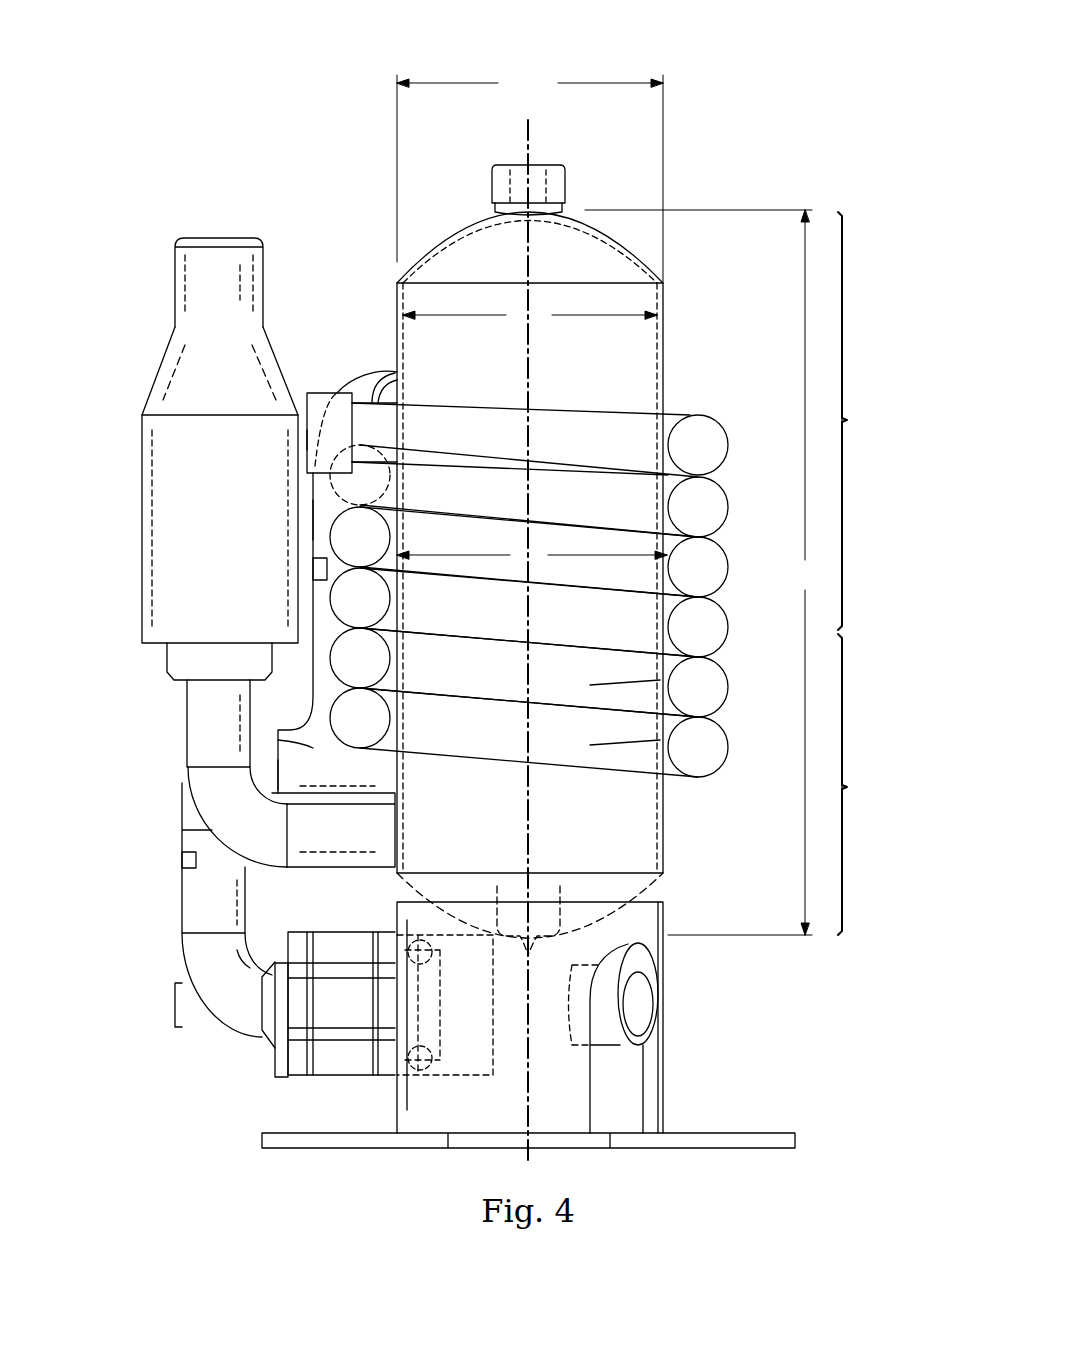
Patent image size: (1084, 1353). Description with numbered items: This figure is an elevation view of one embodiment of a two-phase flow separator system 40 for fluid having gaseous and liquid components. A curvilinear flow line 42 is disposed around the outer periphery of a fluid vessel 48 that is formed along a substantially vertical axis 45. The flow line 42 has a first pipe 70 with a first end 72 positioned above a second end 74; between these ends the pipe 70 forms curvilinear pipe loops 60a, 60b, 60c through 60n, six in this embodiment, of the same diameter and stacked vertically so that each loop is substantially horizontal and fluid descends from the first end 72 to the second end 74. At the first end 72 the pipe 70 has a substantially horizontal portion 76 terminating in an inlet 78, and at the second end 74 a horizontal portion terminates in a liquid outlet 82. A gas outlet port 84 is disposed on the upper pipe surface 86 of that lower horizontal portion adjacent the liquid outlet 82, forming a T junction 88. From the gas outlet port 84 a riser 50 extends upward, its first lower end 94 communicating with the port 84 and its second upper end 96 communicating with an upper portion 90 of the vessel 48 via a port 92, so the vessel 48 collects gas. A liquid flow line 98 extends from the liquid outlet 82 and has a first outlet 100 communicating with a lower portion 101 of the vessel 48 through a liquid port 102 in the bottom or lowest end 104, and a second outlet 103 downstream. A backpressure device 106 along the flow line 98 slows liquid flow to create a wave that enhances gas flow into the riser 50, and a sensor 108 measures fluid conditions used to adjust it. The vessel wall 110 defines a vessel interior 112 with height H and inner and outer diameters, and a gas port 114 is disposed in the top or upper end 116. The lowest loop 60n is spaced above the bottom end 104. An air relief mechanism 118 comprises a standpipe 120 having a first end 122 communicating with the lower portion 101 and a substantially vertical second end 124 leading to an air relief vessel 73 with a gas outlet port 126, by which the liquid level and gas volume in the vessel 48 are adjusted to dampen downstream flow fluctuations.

The two-phase flow separator system 40 is at (707, 175).
The curvilinear flow line 42 is at (727, 415).
The central axis 45 is at (526, 142).
The fluid vessel 48 is at (582, 207).
The riser 50 is at (313, 520).
The curvilinear pipe loop 60a is at (729, 440).
The curvilinear pipe loop 60b is at (729, 500).
The curvilinear pipe loop 60c is at (729, 560).
The lowest pipe loop 60n is at (729, 752).
The first pipe 70 is at (684, 407).
The first end 72 is at (322, 393).
The air relief vessel 73 is at (143, 525).
The second end 74 is at (292, 778).
The substantially horizontal portion 76 is at (482, 403).
The inlet 78 is at (307, 442).
The liquid outlet 82 is at (278, 748).
The gas outlet port 84 is at (397, 688).
The upper pipe surface 86 is at (307, 730).
The T junction 88 is at (355, 795).
The upper portion 90 is at (861, 420).
The port 92 is at (400, 392).
The first lower end 94 is at (313, 685).
The second upper end 96 is at (362, 384).
The liquid flow line 98 is at (181, 905).
The first outlet 100 is at (557, 900).
The lower portion 101 is at (868, 790).
The liquid port 102 is at (510, 900).
The second outlet 103 is at (640, 1006).
The bottom or lowest end 104 is at (665, 912).
The backpressure device 106 is at (348, 1076).
The sensor 108 is at (313, 568).
The vessel wall 110 is at (665, 284).
The vessel interior 112 is at (445, 248).
The gas port 114 is at (550, 165).
The top or upper end 116 is at (478, 210).
The air relief mechanism 118 is at (184, 440).
The standpipe 120 is at (186, 708).
The first end 122 is at (332, 868).
The substantially vertical second end 124 is at (178, 694).
The gas outlet port 126 is at (175, 288).